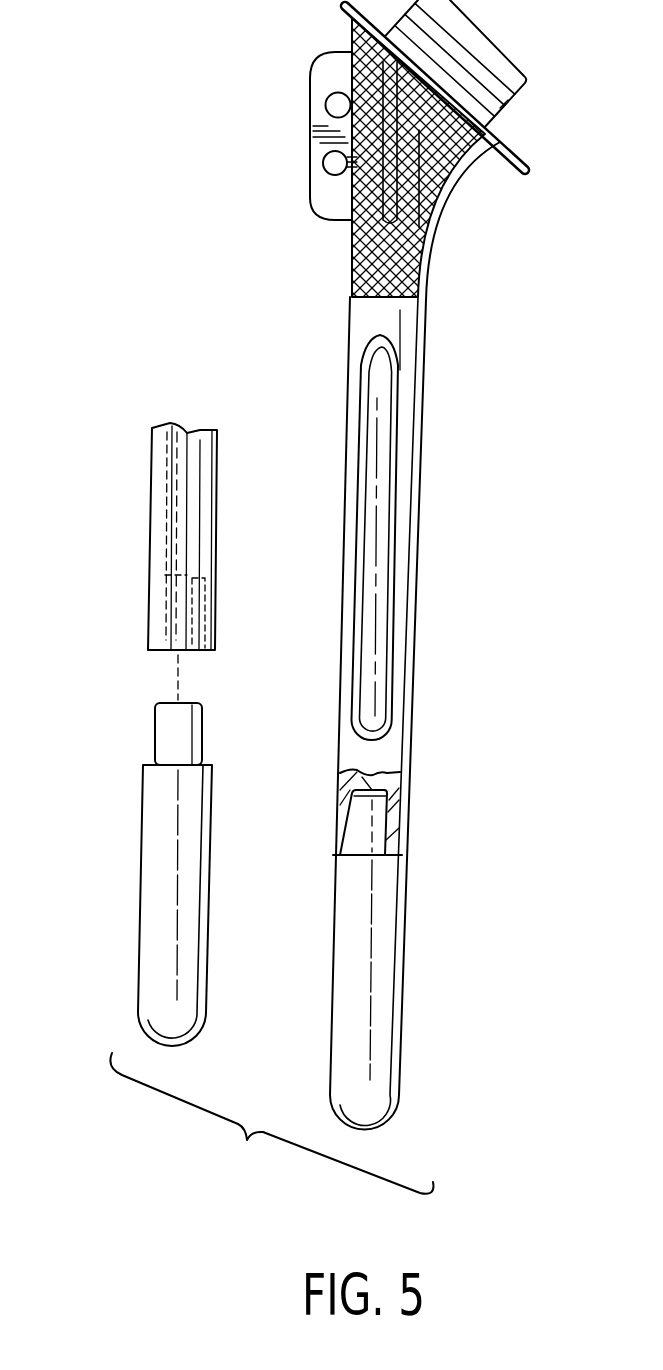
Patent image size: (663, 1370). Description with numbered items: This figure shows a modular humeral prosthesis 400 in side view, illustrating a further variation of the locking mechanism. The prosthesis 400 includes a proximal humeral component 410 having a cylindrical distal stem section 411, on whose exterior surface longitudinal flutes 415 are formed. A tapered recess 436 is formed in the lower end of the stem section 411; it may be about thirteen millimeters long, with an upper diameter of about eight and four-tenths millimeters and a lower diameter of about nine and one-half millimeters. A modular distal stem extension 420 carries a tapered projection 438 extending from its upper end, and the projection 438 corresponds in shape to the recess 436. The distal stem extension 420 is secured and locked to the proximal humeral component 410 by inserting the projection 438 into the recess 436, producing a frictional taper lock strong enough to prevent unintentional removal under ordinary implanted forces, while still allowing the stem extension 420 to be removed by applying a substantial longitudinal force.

The prosthesis 400 is at (488, 463).
The proximal humeral component 410 is at (420, 342).
The cylindrical distal stem section 411 is at (410, 610).
The longitudinal flutes 415 is at (382, 557).
The modular distal stem extension 420 is at (410, 937).
The tapered recess 436 is at (387, 802).
The tapered projection 438 is at (382, 828).